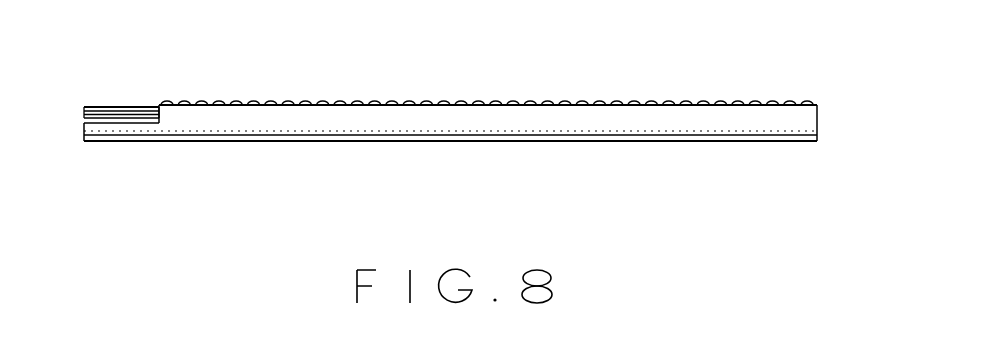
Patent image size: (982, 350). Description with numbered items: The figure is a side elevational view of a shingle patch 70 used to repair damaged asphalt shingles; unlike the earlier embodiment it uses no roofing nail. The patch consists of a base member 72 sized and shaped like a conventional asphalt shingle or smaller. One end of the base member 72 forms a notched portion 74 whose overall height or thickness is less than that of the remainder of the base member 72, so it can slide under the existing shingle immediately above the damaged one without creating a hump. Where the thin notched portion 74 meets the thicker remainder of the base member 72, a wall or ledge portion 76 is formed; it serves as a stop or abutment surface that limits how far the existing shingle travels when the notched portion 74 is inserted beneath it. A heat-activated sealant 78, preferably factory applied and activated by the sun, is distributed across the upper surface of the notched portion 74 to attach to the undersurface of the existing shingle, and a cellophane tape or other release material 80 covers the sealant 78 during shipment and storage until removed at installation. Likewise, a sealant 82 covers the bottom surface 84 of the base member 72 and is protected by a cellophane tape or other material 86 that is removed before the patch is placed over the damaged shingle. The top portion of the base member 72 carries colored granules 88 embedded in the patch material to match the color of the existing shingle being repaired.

The shingle patch 70 is at (123, 80).
The base member 72 is at (806, 120).
The notched portion 74 is at (88, 123).
The wall or ledge portion 76 is at (159, 105).
The sealant 78 is at (84, 118).
The release tape 80 is at (92, 113).
The sealant 82 is at (818, 133).
The bottom surface 84 is at (421, 130).
The release tape 86 is at (290, 142).
The colored granules 88 is at (619, 105).